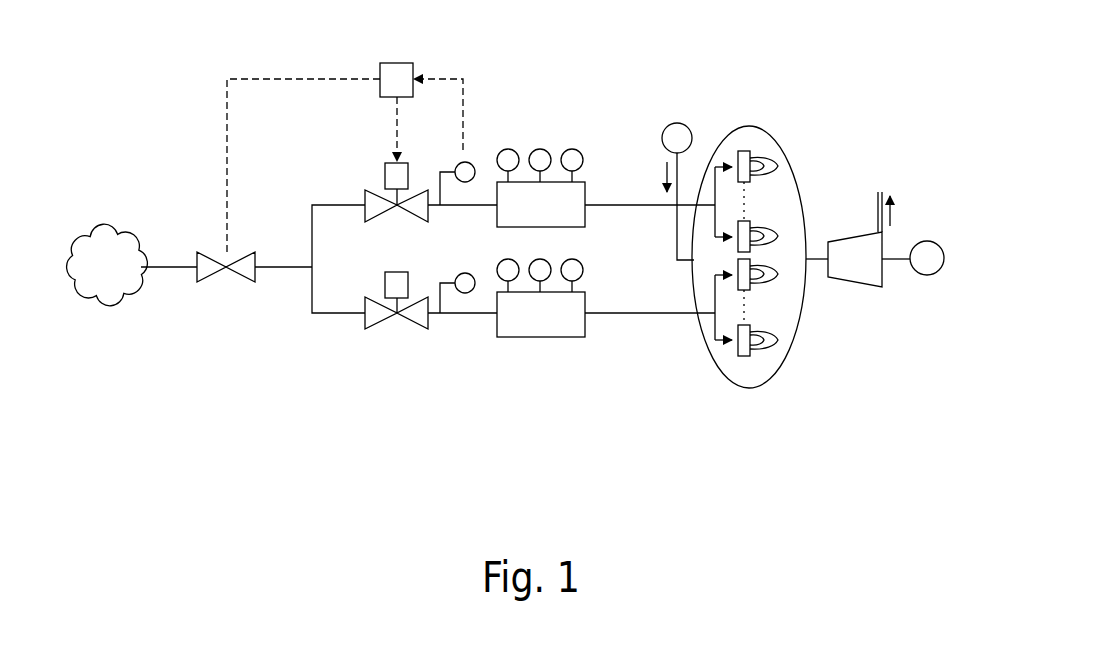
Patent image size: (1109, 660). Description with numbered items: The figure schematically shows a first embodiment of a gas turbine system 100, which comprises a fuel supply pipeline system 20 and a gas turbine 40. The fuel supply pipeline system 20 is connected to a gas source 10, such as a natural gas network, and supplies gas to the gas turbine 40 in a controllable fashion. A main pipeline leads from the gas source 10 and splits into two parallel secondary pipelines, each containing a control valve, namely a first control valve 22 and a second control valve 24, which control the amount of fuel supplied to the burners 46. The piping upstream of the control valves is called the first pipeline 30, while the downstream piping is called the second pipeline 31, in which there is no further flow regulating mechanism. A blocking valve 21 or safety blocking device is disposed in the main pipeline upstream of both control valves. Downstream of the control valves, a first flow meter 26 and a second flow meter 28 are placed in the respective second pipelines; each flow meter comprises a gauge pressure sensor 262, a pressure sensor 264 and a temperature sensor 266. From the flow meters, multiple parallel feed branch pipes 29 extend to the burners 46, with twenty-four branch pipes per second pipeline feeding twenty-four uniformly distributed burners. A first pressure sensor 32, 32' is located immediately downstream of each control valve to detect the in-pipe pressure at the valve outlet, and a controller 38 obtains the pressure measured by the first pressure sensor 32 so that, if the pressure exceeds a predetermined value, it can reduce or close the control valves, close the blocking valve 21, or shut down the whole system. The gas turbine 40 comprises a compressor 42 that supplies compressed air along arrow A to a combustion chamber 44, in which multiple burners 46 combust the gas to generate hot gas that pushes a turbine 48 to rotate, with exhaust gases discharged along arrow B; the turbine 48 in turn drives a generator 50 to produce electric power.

The gas turbine system 100 is at (730, 50).
The gas source 10 is at (110, 233).
The blocking valve 21 is at (248, 254).
The fuel supply pipeline system 20 is at (592, 106).
The first control valve 22 is at (392, 221).
The second control valve 24 is at (386, 328).
The first flow meter 26 is at (541, 204).
The second flow meter 28 is at (541, 298).
The feed branch pipe 29 is at (712, 348).
The first pipeline 30 is at (336, 206).
The second pipeline 31 is at (620, 206).
The first pressure sensor 32 is at (472, 169).
The first pressure sensor 32' is at (482, 274).
The controller 38 is at (396, 80).
The gas turbine 40 is at (780, 275).
The compressor 42 is at (688, 126).
The combustion chamber 44 is at (783, 152).
The burner 46 is at (780, 170).
The turbine 48 is at (855, 239).
The generator 50 is at (930, 238).
The gauge pressure sensor 262 is at (513, 150).
The pressure sensor 264 is at (548, 152).
The temperature sensor 266 is at (583, 161).